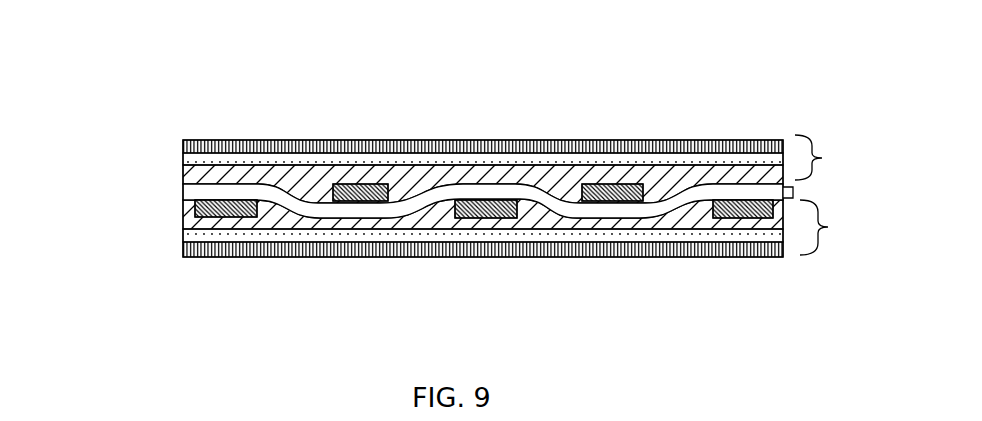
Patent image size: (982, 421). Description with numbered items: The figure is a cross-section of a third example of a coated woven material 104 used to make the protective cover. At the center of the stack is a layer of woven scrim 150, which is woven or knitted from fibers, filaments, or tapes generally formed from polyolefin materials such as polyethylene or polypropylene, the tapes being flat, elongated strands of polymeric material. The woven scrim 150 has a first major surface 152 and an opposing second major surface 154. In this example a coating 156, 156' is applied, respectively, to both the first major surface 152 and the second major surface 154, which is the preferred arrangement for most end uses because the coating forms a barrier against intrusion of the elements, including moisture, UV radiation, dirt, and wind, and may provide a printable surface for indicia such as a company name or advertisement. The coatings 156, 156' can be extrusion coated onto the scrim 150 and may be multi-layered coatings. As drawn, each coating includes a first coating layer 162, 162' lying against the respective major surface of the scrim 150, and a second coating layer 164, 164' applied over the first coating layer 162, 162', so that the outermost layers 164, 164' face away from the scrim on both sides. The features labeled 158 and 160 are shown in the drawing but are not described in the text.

The coated woven material 104 is at (155, 87).
The woven scrim 150 is at (160, 200).
The first major surface 152 is at (463, 184).
The second major surface 154 is at (355, 219).
The coating 156 is at (836, 157).
The coating 156' is at (846, 227).
The electronic components 158 is at (610, 192).
The gap 160 is at (793, 191).
The first coating layer 162 is at (498, 147).
The first coating layer 162' is at (483, 268).
The second coating layer 164 is at (483, 121).
The second coating layer 164' is at (483, 283).